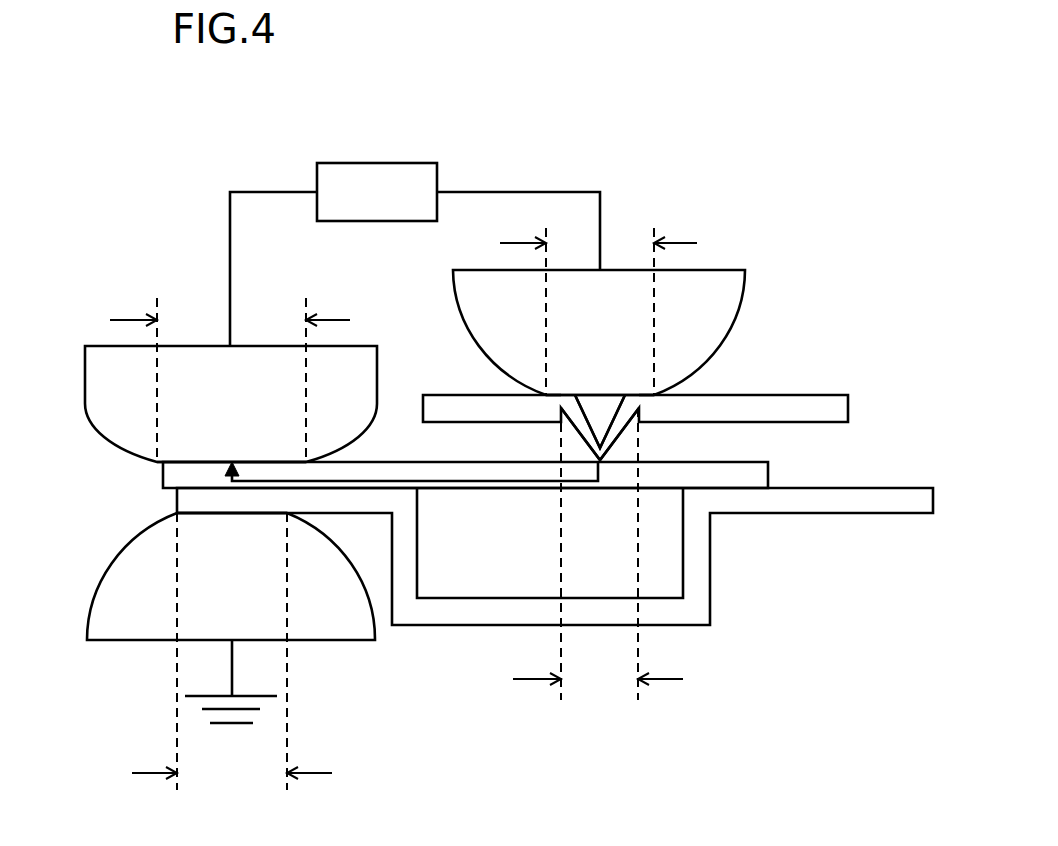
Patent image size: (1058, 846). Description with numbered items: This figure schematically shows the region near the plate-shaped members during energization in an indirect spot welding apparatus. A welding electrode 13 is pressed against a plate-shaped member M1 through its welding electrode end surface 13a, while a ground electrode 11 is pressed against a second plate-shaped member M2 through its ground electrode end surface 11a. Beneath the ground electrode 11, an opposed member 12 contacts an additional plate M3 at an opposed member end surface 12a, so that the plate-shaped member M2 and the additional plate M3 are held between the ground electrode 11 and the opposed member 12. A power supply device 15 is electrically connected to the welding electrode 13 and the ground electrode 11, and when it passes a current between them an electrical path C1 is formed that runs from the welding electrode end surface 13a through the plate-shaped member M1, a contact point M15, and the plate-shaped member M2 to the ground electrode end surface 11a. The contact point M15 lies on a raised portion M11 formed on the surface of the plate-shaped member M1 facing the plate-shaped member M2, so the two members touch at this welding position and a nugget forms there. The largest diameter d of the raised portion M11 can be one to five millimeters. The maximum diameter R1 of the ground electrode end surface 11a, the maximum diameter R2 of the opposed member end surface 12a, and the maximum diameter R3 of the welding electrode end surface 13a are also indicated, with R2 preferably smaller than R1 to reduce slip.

The ground electrode 11 is at (102, 387).
The ground electrode end surface 11a is at (197, 463).
The opposed member 12 is at (112, 598).
The opposed member end surface 12a is at (232, 513).
The welding electrode 13 is at (715, 307).
The welding electrode end surface 13a is at (648, 402).
The power supply device 15 is at (345, 173).
The plate-shaped member M1 is at (836, 408).
The plate-shaped member M2 is at (757, 473).
The additional plate M3 is at (895, 503).
The raised portion M11 is at (590, 412).
The contact point M15 is at (600, 462).
The electrical path C1 is at (510, 483).
The maximum diameter of the ground electrode end surface R1 is at (225, 374).
The maximum diameter of the opposed member end surface R2 is at (225, 651).
The maximum diameter of the welding electrode end surface R3 is at (605, 303).
The largest diameter of the raised portion d is at (598, 554).